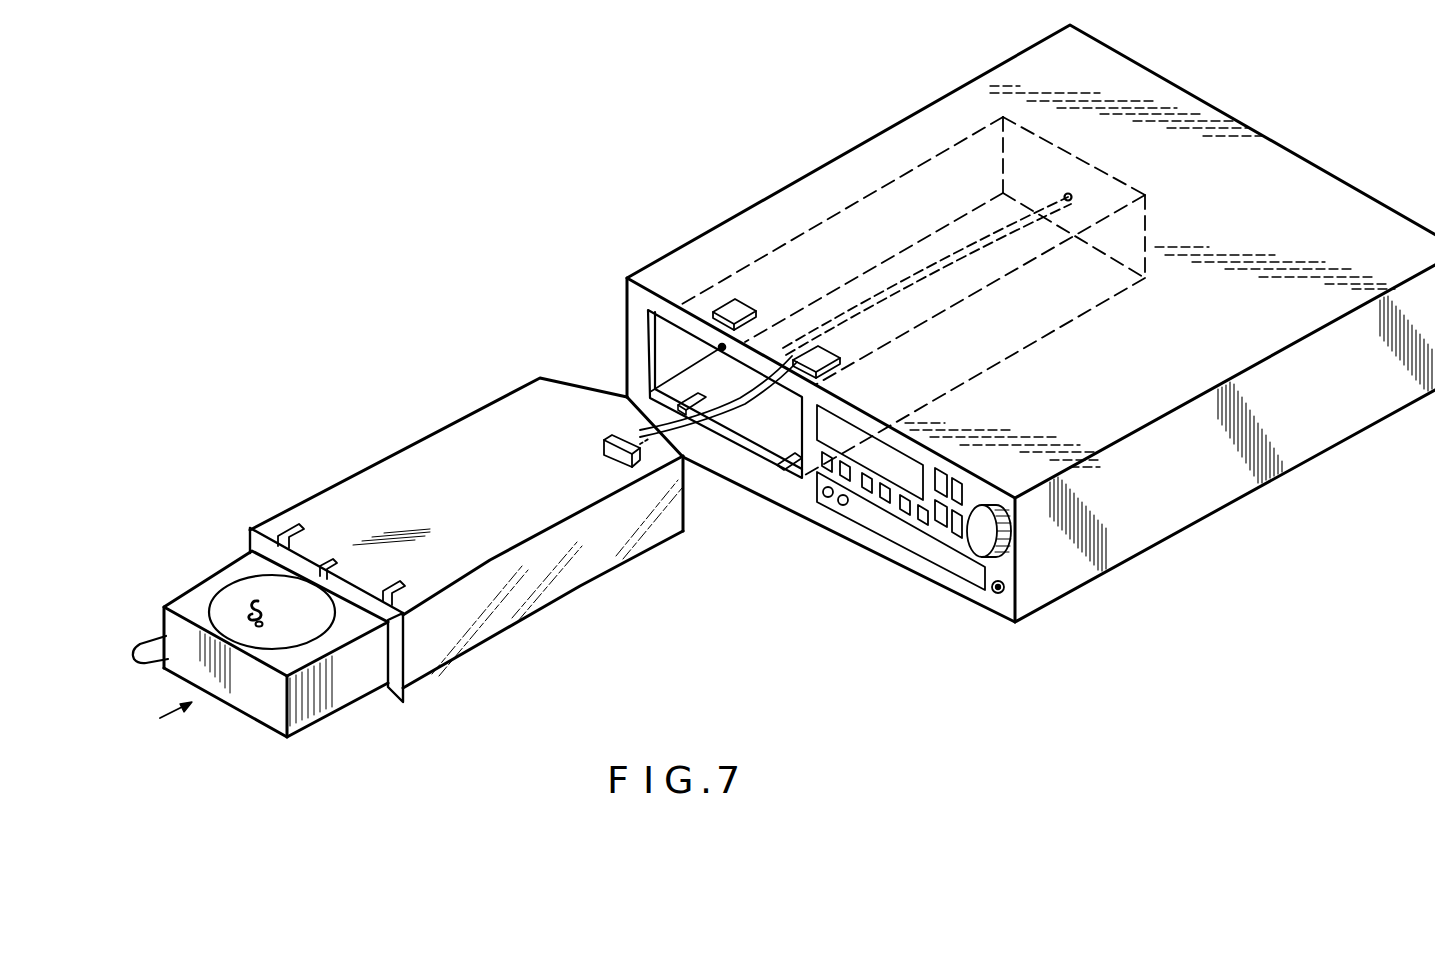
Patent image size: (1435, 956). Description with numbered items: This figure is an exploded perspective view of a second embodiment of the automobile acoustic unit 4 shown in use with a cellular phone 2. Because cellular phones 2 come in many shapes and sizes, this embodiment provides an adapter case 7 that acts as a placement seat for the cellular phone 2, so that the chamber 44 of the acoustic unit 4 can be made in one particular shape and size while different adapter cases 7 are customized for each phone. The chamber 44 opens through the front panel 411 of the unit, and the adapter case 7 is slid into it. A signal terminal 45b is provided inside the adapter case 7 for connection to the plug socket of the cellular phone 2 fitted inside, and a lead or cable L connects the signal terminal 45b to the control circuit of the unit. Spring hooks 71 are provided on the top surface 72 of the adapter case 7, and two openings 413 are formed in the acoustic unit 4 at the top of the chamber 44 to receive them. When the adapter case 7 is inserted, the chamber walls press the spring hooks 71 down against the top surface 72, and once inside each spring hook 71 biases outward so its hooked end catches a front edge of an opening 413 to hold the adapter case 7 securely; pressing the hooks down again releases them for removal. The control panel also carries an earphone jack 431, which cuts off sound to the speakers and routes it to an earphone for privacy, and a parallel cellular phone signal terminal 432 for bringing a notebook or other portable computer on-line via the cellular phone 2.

The cellular phone 2 is at (335, 723).
The automobile acoustic unit 4 is at (897, 93).
The adapter case 7 is at (488, 653).
The chamber 44 is at (664, 335).
The signal terminal 45b is at (605, 435).
The spring hook 71 is at (300, 528).
The top surface 72 is at (481, 493).
The front panel 411 is at (994, 593).
The opening 413 is at (828, 350).
The earphone jack 431 is at (826, 497).
The parallel cellular phone signal terminal 432 is at (848, 505).
The cable L is at (663, 435).